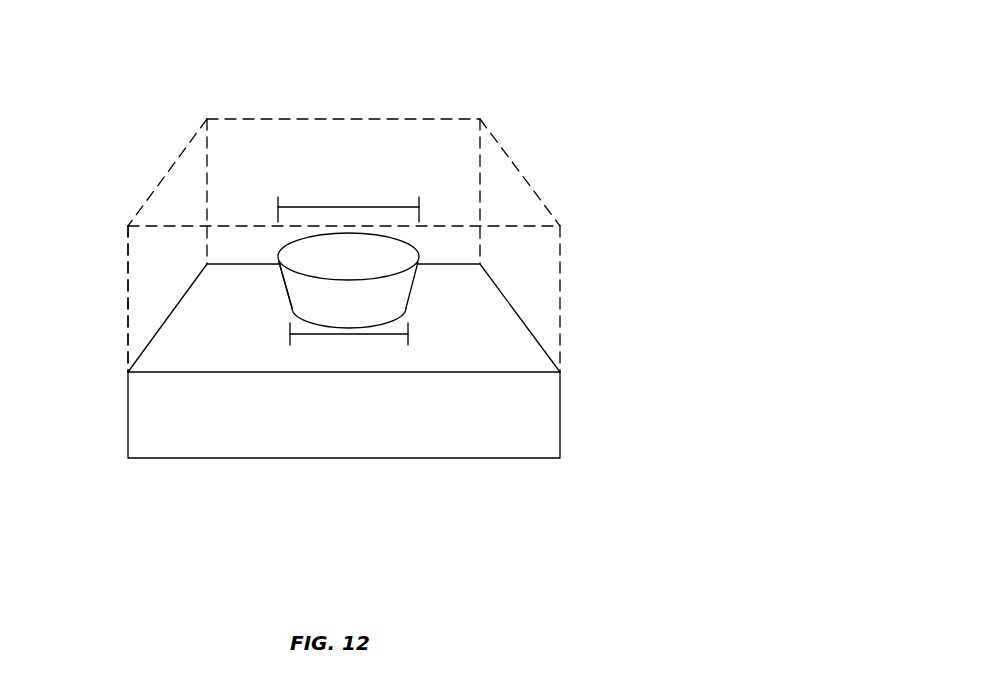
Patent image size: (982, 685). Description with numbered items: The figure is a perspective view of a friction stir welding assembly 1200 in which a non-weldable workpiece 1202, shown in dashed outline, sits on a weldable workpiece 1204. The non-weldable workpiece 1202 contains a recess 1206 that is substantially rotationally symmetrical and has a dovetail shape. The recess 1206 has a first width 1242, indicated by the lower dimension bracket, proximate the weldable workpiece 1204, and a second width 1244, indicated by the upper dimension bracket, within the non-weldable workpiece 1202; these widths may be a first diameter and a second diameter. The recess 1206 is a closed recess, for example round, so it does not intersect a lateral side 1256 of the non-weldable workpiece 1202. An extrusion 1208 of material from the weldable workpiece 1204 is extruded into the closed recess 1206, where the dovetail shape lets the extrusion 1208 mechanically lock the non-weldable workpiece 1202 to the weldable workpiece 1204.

The FSW assembly 1200 is at (568, 57).
The non-weldable workpiece 1202 is at (523, 176).
The weldable workpiece 1204 is at (560, 410).
The recess 1206 is at (418, 292).
The extrusion 1208 is at (305, 292).
The first width 1242 is at (343, 335).
The second width 1244 is at (334, 207).
The lateral side 1256 is at (157, 262).